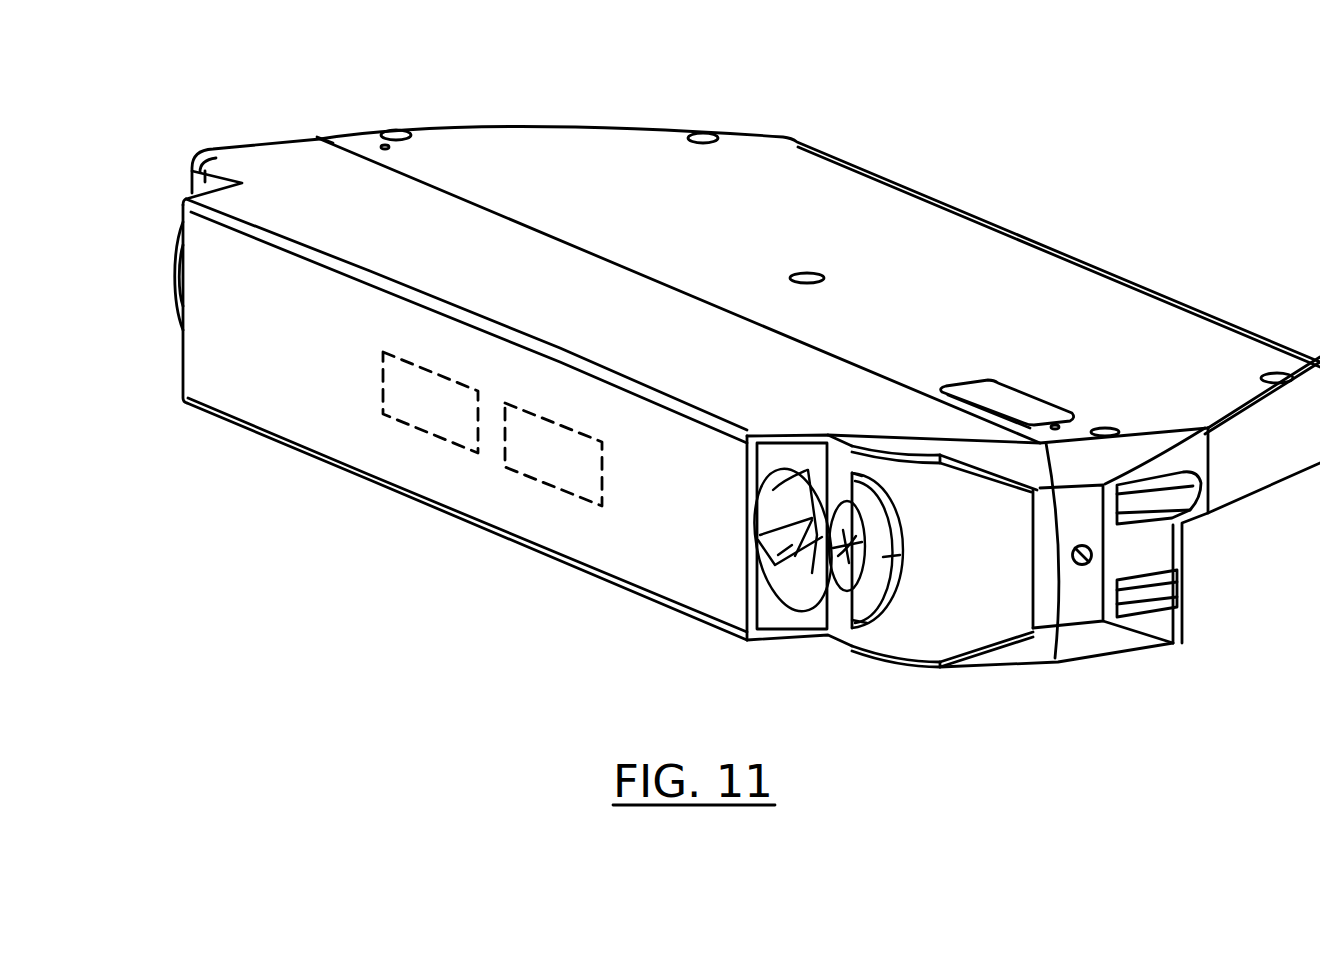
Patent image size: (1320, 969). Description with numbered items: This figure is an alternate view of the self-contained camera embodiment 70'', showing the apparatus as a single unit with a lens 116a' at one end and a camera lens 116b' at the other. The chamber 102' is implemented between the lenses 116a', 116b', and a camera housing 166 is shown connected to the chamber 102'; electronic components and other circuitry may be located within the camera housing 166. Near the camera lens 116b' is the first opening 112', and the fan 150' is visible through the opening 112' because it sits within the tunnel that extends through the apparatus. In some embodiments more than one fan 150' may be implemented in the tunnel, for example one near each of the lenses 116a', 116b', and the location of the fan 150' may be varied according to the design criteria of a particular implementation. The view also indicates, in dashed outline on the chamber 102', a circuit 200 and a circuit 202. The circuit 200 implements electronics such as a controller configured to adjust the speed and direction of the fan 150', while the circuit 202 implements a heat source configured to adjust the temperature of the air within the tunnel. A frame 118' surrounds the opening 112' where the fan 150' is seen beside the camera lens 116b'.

The self-contained camera embodiment 70'' is at (675, 371).
The chamber 102' is at (751, 383).
The camera housing 166 is at (1037, 268).
The lens 116a' is at (106, 276).
The camera lens 116b' is at (825, 610).
The circuit 200 is at (386, 350).
The heat source 202 is at (540, 410).
The window frame 118' is at (744, 540).
The fan 150' is at (791, 490).
The first opening 112' is at (775, 575).